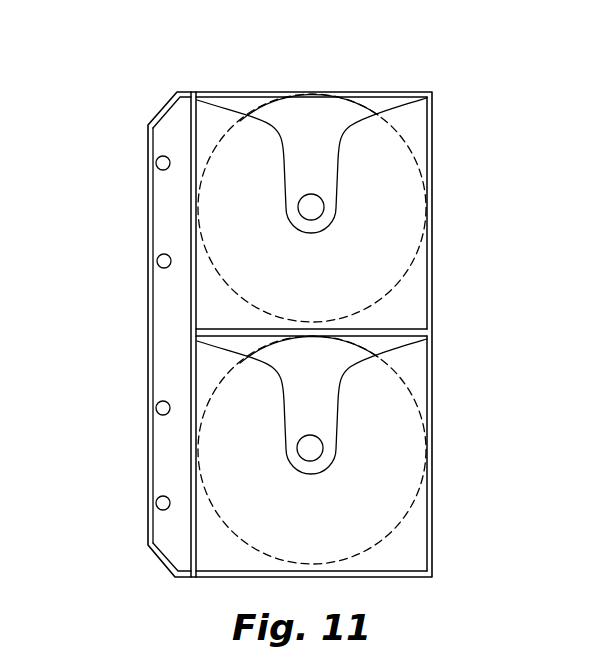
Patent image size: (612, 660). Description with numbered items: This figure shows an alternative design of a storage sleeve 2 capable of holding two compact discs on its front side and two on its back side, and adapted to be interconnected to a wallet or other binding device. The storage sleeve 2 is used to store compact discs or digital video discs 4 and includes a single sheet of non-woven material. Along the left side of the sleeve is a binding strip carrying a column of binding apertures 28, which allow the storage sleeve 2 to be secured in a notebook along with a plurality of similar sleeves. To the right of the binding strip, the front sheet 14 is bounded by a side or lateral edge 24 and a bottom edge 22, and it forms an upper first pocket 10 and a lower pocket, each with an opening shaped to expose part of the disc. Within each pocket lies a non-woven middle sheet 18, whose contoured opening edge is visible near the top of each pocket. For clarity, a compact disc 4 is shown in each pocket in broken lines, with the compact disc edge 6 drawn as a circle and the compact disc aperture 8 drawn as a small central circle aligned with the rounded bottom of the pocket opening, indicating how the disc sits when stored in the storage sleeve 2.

The storage sleeve 2 is at (466, 262).
The compact disc 4 is at (332, 93).
The compact disc edge 6 is at (410, 388).
The compact disc aperture 8 is at (323, 446).
The first pocket 10 is at (383, 97).
The front sheet 14 is at (208, 132).
The non-woven middle sheet 18 is at (225, 100).
The bottom edge 22 is at (413, 580).
The side edge 24 is at (148, 205).
The binding aperture 28 is at (157, 262).